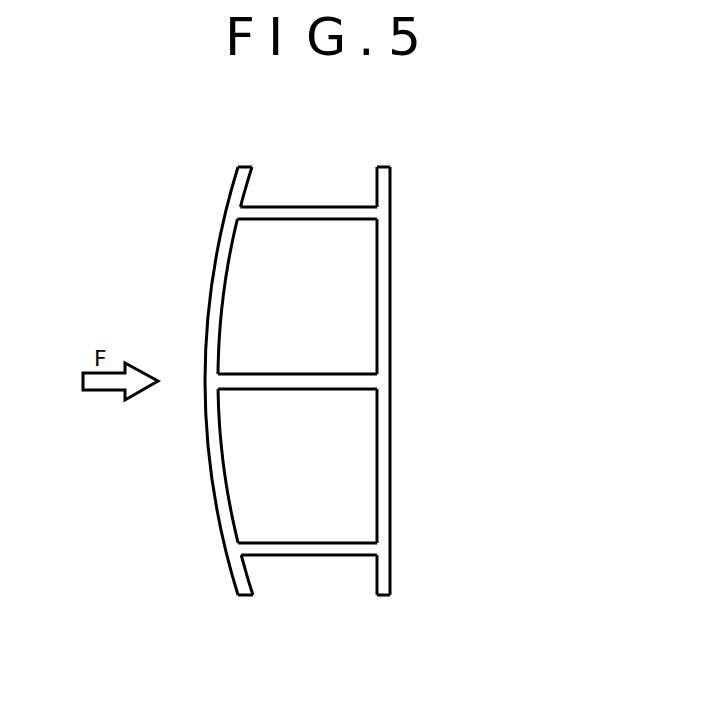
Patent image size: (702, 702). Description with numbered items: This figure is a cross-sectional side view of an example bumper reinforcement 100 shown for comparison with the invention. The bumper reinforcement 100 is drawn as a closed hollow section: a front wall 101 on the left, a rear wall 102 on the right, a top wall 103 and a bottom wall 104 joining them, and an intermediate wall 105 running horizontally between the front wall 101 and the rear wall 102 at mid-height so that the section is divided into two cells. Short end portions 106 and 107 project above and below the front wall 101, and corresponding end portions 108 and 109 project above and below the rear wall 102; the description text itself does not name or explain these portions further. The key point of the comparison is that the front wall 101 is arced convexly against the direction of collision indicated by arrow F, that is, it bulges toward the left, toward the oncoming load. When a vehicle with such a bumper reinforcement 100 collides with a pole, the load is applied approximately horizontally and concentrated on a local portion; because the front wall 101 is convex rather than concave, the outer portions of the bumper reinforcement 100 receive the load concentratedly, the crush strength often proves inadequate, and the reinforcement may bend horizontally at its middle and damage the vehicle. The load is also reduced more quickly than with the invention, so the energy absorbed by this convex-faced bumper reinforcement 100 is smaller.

The vehicle body member (frame member) 100 is at (428, 212).
The first flange (curved outer plate) 101 is at (217, 243).
The second flange (inner plate) 102 is at (391, 263).
The upper rib 103 is at (318, 207).
The lower rib 104 is at (331, 555).
The middle rib 105 is at (318, 374).
The upper end portion of first flange 106 is at (235, 180).
The lower end portion of first flange 107 is at (227, 560).
The upper end portion of second flange 108 is at (392, 185).
The lower end portion of second flange 109 is at (392, 575).